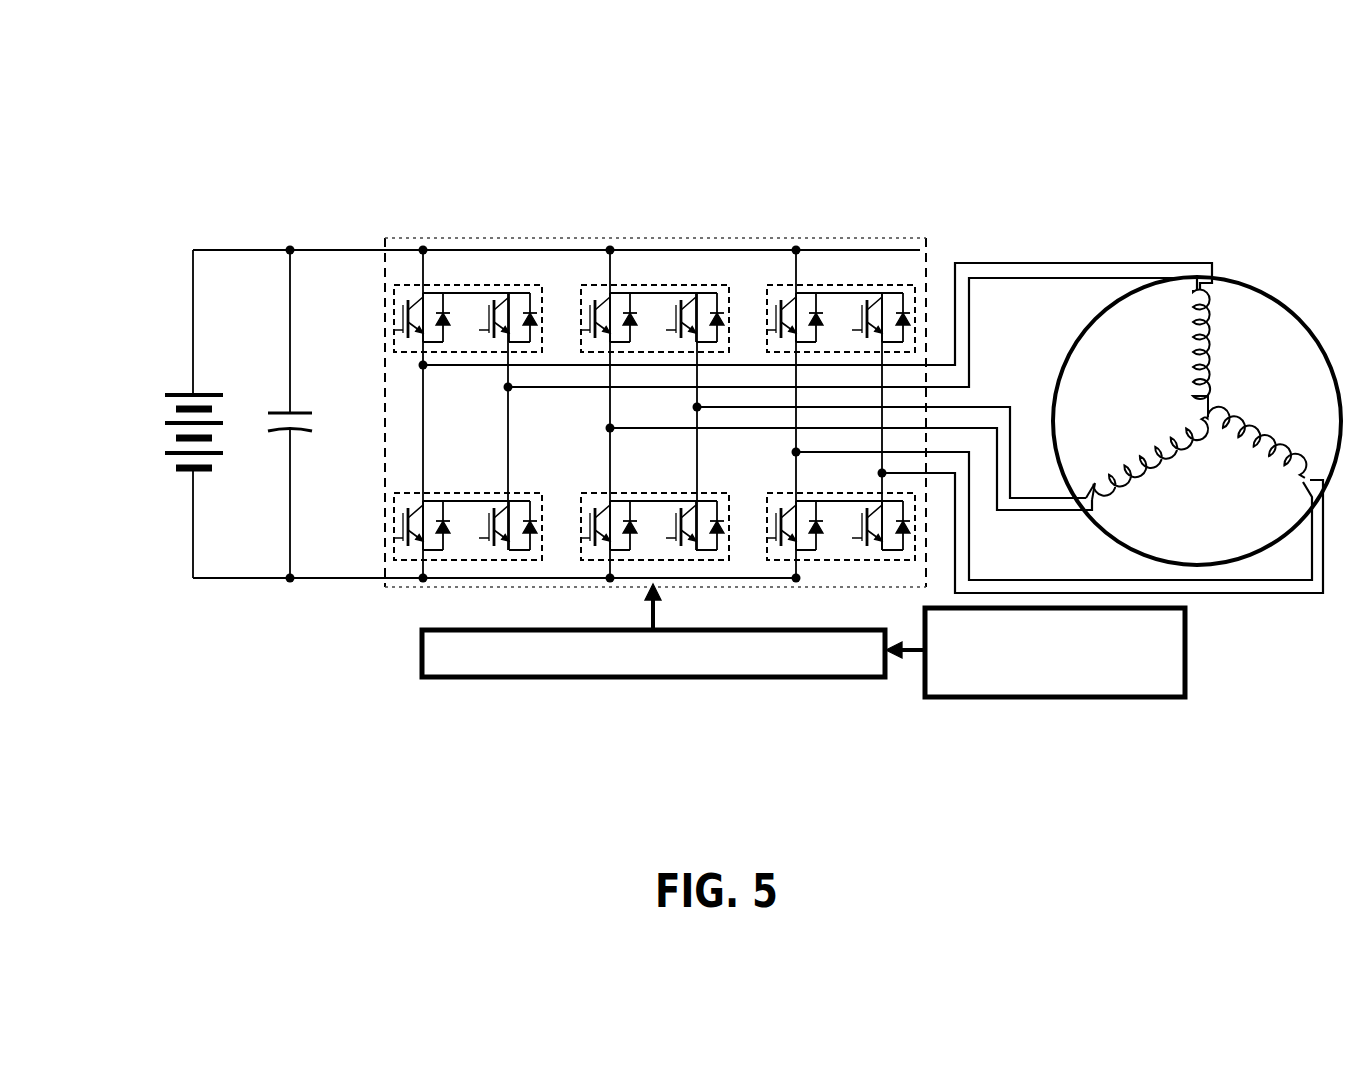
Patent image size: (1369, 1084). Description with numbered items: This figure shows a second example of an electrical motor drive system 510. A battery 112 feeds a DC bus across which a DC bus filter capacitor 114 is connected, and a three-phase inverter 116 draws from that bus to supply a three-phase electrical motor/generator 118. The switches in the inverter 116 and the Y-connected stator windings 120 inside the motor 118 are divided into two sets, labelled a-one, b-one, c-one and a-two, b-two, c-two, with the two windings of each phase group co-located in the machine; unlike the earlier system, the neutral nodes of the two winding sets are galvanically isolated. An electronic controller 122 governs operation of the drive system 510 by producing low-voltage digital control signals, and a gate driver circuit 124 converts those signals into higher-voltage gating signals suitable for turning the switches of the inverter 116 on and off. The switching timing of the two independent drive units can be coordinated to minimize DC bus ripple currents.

The electrical motor drive system 510 is at (168, 200).
The battery 112 is at (187, 395).
The DC bus filter capacitor 114 is at (286, 437).
The three-phase inverter 116 is at (920, 237).
The three-phase electrical motor/generator 118 is at (1265, 295).
The Y-connected stator windings 120 is at (1263, 475).
The electronic controller 122 is at (1015, 702).
The gate driver circuit 124 is at (738, 678).